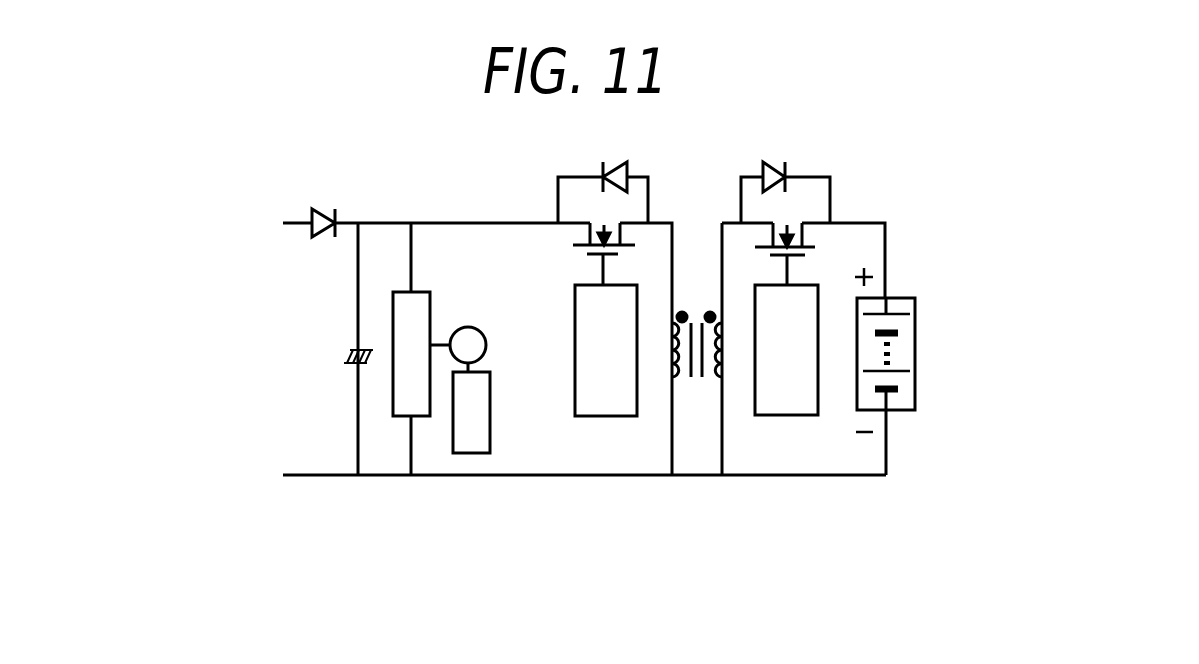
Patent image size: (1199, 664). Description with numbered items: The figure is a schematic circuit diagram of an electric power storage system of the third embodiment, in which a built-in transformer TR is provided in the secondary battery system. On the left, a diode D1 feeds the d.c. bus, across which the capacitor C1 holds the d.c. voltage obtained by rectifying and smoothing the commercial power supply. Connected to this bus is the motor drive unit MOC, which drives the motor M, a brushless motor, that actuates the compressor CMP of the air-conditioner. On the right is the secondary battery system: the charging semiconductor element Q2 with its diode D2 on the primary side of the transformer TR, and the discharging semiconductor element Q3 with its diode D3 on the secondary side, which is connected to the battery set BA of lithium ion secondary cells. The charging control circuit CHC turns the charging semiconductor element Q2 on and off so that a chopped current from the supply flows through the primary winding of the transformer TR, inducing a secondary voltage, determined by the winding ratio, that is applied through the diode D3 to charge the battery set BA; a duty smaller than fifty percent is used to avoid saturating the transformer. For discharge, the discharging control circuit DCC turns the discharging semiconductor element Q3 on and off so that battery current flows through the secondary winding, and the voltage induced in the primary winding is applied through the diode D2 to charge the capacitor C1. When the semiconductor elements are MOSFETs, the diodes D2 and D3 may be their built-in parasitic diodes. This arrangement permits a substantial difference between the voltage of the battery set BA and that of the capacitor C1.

The diode D1 is at (313, 211).
The capacitor C1 is at (347, 356).
The motor drive unit MOC is at (280, 323).
The motor M is at (487, 346).
The compressor CMP is at (424, 505).
The diode D2 is at (606, 174).
The charging semiconductor element Q2 is at (588, 237).
The charging control circuit CHC is at (588, 418).
The transformer TR is at (697, 383).
The diode D3 is at (766, 174).
The discharging semiconductor element Q3 is at (812, 247).
The discharging control circuit DCC is at (728, 548).
The battery set BA is at (916, 327).